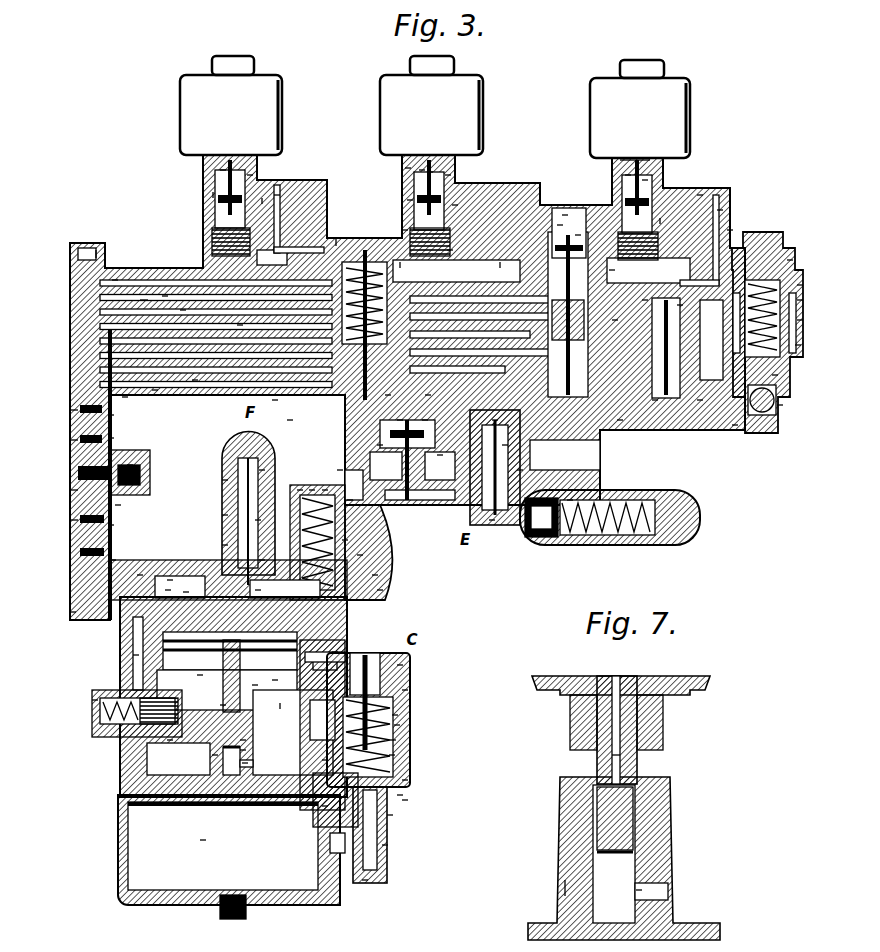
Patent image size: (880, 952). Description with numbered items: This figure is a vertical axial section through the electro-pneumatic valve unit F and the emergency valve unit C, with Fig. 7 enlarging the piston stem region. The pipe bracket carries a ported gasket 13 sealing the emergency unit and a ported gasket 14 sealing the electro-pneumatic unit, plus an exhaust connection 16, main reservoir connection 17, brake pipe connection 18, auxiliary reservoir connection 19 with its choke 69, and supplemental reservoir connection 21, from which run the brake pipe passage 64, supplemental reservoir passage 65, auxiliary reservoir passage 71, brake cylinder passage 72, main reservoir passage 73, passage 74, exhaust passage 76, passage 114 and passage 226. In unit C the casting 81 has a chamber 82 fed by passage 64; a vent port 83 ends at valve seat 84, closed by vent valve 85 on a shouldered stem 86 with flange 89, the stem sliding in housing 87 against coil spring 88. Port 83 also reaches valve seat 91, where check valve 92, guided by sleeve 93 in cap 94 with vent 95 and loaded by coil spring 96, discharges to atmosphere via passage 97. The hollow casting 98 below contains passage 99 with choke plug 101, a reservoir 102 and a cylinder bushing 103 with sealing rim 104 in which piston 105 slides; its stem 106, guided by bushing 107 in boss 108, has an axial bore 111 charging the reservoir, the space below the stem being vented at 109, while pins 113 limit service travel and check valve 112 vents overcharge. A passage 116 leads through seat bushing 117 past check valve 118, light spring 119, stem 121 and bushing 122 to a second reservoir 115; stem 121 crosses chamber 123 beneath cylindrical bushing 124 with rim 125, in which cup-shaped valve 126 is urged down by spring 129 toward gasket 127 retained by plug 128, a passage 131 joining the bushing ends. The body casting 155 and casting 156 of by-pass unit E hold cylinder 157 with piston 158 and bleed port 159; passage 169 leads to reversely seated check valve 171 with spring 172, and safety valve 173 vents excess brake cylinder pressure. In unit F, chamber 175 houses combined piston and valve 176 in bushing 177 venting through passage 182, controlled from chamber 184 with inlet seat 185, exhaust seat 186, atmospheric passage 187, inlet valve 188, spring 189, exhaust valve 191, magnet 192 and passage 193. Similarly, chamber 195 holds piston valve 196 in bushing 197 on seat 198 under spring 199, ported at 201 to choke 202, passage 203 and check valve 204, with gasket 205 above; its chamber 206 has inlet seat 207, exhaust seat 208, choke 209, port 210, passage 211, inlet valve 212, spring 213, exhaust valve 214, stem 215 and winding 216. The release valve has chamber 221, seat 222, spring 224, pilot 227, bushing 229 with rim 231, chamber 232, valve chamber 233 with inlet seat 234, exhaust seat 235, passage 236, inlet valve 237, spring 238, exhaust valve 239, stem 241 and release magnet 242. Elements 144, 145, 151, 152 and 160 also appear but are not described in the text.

In FIG. 3, the valve actuating magnet 192 is at (231, 105).
In FIG. 3, the release magnet 242 is at (431, 105).
In FIG. 3, the solenoid winding 216 is at (690, 99).
In FIG. 3, the stem 215 is at (640, 160).
In FIG. 3, the passage 187 is at (222, 170).
In FIG. 3, the exhaust valve 191 is at (250, 175).
In FIG. 3, the ported exhaust valve seat 186 is at (205, 170).
In FIG. 3, the chamber 184 is at (205, 185).
In FIG. 3, the spring 189 is at (215, 195).
In FIG. 3, the ported inlet valve seat 185 is at (205, 215).
In FIG. 3, the inlet valve 188 is at (265, 200).
In FIG. 3, the passage 193 is at (280, 195).
In FIG. 3, the chamber 175 is at (338, 240).
In FIG. 3, the exhaust connection 16 is at (100, 255).
In FIG. 3, the passage 74 is at (145, 300).
In FIG. 3, the ported face and ported gasket 14 is at (115, 282).
In FIG. 3, the brake cylinder passage 72 is at (165, 296).
In FIG. 3, the exhaust passage 76 is at (183, 310).
In FIG. 3, the auxiliary reservoir passage 71 is at (240, 325).
In FIG. 3, the passage 236 is at (408, 168).
In FIG. 3, the ported exhaust valve seat 235 is at (430, 172).
In FIG. 3, the exhaust valve 239 is at (448, 175).
In FIG. 3, the stem 241 is at (422, 170).
In FIG. 3, the valve chamber 233 is at (458, 185).
In FIG. 3, the ported inlet valve seat 234 is at (410, 200).
In FIG. 3, the inlet valve 237 is at (455, 205).
In FIG. 3, the spring 238 is at (405, 230).
In FIG. 3, the chamber 221 is at (560, 205).
In FIG. 3, the chamber 206 is at (565, 215).
In FIG. 3, the bushing 229 is at (560, 225).
In FIG. 3, the inlet valve 212 is at (578, 235).
In FIG. 3, the combined piston and valve 176 is at (418, 270).
In FIG. 3, the cylinder bushing 177 is at (479, 270).
In FIG. 3, the passage 211 is at (628, 175).
In FIG. 3, the exhaust valve 214 is at (645, 180).
In FIG. 3, the ported exhaust valve seat 208 is at (663, 190).
In FIG. 3, the ported inlet valve seat 207 is at (660, 220).
In FIG. 3, the spring 213 is at (700, 195).
In FIG. 3, the port 210 is at (720, 210).
In FIG. 3, the choke 209 is at (730, 230).
In FIG. 3, the gasket 205 is at (795, 260).
In FIG. 3, the chamber 195 is at (800, 285).
In FIG. 3, the spring 199 is at (800, 300).
In FIG. 3, the cylinder bushing 197 is at (800, 320).
In FIG. 3, the combined piston and valve 196 is at (798, 345).
In FIG. 3, the annular seat 198 is at (775, 377).
In FIG. 3, the choke 202 is at (780, 405).
In FIG. 3, the passage 203 is at (735, 427).
In FIG. 3, the port 201 is at (700, 402).
In FIG. 3, the check valve 204 is at (655, 402).
In FIG. 3, the chamber 232 is at (620, 422).
In FIG. 3, the seat 222 is at (625, 278).
In FIG. 3, the pilot 227 is at (655, 298).
In FIG. 3, the spring 224 is at (685, 300).
In FIG. 3, the annular sealing rim 231 is at (603, 312).
In FIG. 3, the passage 114 is at (125, 397).
In FIG. 3, the passage 73 is at (155, 392).
In FIG. 3, the brake pipe passage 64 is at (195, 382).
In FIG. 3, the body casting 155 is at (275, 400).
In FIG. 3, the main reservoir connection 17 is at (112, 417).
In FIG. 3, the brake pipe connection 18 is at (112, 438).
In FIG. 3, the passage 226 is at (185, 396).
In FIG. 3, the auxiliary reservoir connection 19 is at (130, 465).
In FIG. 3, the choke 69 is at (131, 476).
In FIG. 3, the supplemental reservoir connection 21 is at (118, 505).
In FIG. 3, the supplemental reservoir passage 65 is at (110, 525).
In FIG. 3, the ported face with ported gasket 13 is at (112, 560).
In FIG. 3, the chamber 82 is at (170, 580).
In FIG. 3, the housing 87 is at (225, 480).
In FIG. 3, the coil spring 88 is at (222, 515).
In FIG. 3, the annular flange 89 is at (222, 545).
In FIG. 3, the shouldered stem 86 is at (262, 470).
In FIG. 3, the vent valve 85 is at (258, 520).
In FIG. 3, the valve seat 84 is at (262, 560).
In FIG. 3, the coil spring 96 is at (312, 490).
In FIG. 3, the cap 94 is at (300, 490).
In FIG. 3, the vent 95 is at (325, 490).
In FIG. 3, the casting 156 is at (340, 470).
In FIG. 3, the passage 182 is at (290, 422).
In FIG. 3, the choke plug 101 is at (173, 602).
In FIG. 3, the pins 113 is at (190, 606).
In FIG. 3, the vent port 83 is at (258, 605).
In FIG. 3, the valve 144 is at (390, 383).
In FIG. 3, the valve 145 is at (430, 383).
In FIG. 3, the seat 151 is at (398, 429).
In FIG. 3, the seat 152 is at (424, 429).
In FIG. 3, the cylinder 157 is at (384, 459).
In FIG. 3, the bleed port 159 is at (440, 464).
In FIG. 3, the passage 160 is at (495, 423).
In FIG. 3, the passage 169 is at (505, 445).
In FIG. 3, the check valve 171 is at (520, 470).
In FIG. 3, the safety valve 173 is at (570, 500).
In FIG. 3, the spring 172 is at (492, 522).
In FIG. 3, the piston 158 is at (415, 507).
In FIG. 3, the sleeve 93 is at (350, 502).
In FIG. 3, the check valve 92 is at (345, 540).
In FIG. 3, the valve seat 91 is at (360, 555).
In FIG. 3, the casting 81 is at (375, 575).
In FIG. 3, the passage 97 is at (380, 590).
In FIG. 3, the annular cylinder bushing 103 is at (135, 655).
In FIG. 3, the passage 99 is at (95, 700).
In FIG. 3, the sealing rim 104 is at (200, 675).
In FIG. 3, the axial bore 111 is at (223, 705).
In FIG. 7, the axial bore 111 is at (613, 760).
In FIG. 3, the piston 105 is at (255, 685).
In FIG. 3, the reservoir 102 is at (285, 713).
In FIG. 3, the stem 106 is at (243, 742).
In FIG. 7, the stem 106 is at (645, 815).
In FIG. 3, the bushing 107 is at (243, 750).
In FIG. 7, the bushing 107 is at (640, 852).
In FIG. 3, the check valve 112 is at (170, 740).
In FIG. 3, the boss 108 is at (215, 755).
In FIG. 7, the boss 108 is at (572, 888).
In FIG. 3, the vent 109 is at (248, 764).
In FIG. 7, the vent 109 is at (655, 890).
In FIG. 3, the annular sealing rim 125 is at (325, 760).
In FIG. 3, the passage 116 is at (325, 806).
In FIG. 3, the second reservoir 115 is at (217, 849).
In FIG. 3, the hollow casting 98 is at (335, 652).
In FIG. 3, the threaded plug 128 is at (400, 665).
In FIG. 3, the gasket 127 is at (405, 690).
In FIG. 3, the cylindrical bushing 124 is at (395, 715).
In FIG. 3, the passage 131 is at (397, 725).
In FIG. 3, the cup-shaped valve 126 is at (393, 740).
In FIG. 3, the spring 129 is at (392, 755).
In FIG. 3, the chamber 123 is at (405, 780).
In FIG. 3, the stem 121 is at (400, 795).
In FIG. 3, the bushing 122 is at (405, 800).
In FIG. 3, the valve seat bushing 117 is at (390, 815).
In FIG. 3, the check valve 118 is at (385, 845).
In FIG. 3, the light spring 119 is at (365, 882).